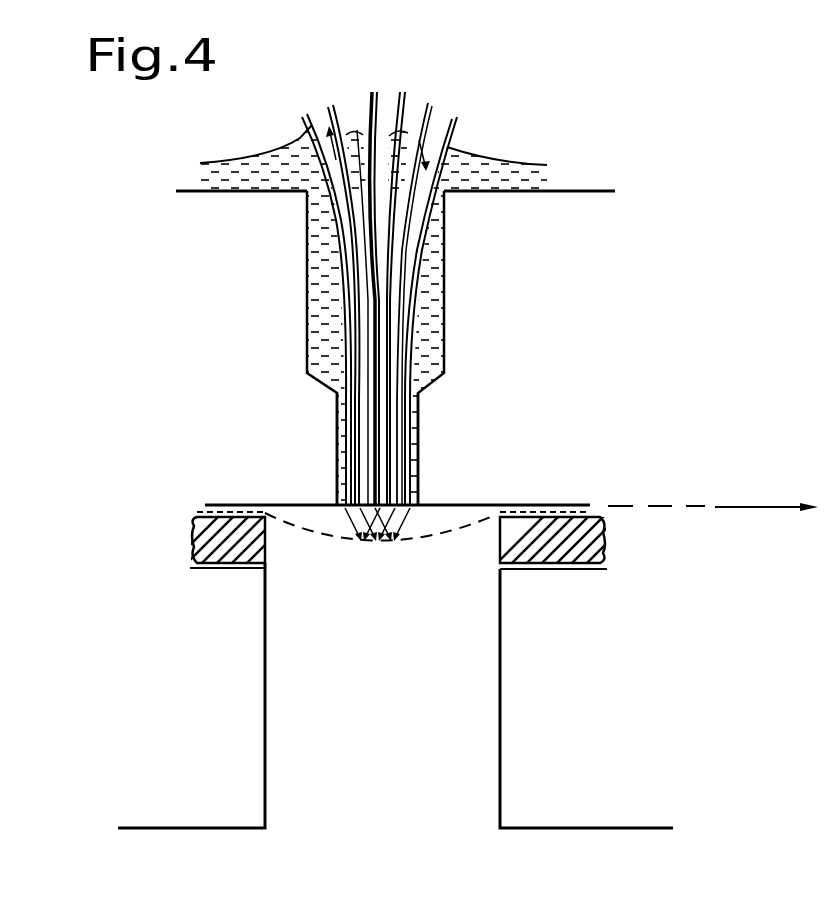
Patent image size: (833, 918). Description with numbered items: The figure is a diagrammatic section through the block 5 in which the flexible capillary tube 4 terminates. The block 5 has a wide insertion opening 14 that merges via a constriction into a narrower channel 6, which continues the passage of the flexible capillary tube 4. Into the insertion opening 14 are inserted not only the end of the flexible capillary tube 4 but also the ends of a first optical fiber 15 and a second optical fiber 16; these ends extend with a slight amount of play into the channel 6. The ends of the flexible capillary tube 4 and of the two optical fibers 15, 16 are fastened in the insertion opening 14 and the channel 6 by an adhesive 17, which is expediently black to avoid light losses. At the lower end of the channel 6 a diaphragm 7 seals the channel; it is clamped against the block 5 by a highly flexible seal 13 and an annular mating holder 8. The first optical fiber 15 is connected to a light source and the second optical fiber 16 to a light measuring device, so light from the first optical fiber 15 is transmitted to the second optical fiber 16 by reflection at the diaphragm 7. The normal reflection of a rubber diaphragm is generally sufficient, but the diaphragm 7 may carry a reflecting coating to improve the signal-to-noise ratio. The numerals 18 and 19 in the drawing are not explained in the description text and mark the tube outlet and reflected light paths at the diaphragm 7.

The flexible capillary tube 4 is at (377, 127).
The block 5 is at (116, 437).
The channel 6 is at (433, 452).
The diaphragm 7 is at (432, 537).
The annular mating holder 8 is at (498, 790).
The highly flexible seal 13 is at (575, 542).
The insertion opening 14 is at (443, 233).
The first optical fiber 15 is at (405, 331).
The second optical fiber 16 is at (362, 319).
The adhesive 17 is at (315, 262).
The outer tube outlet 18 is at (346, 508).
The spray jets 19 is at (398, 508).